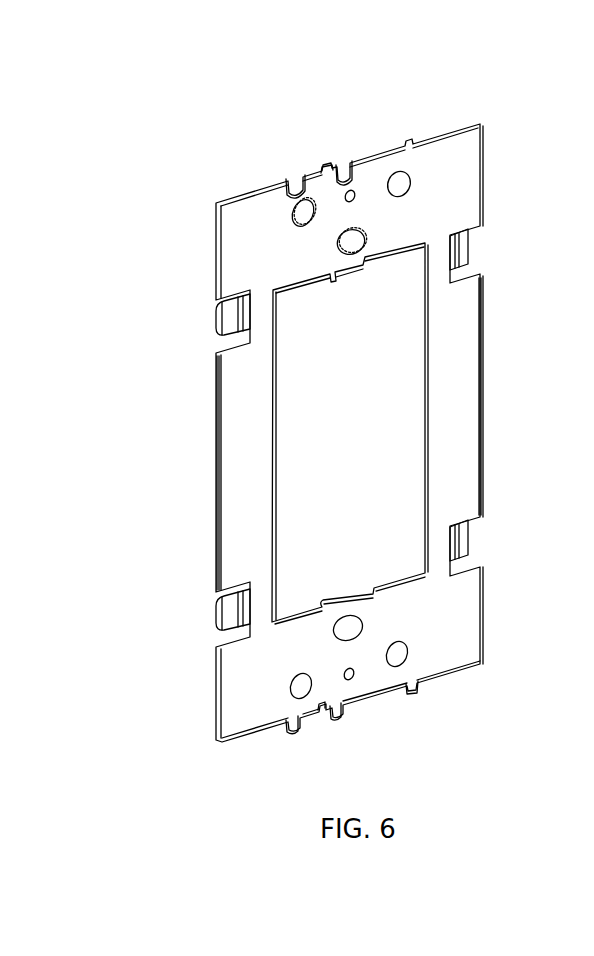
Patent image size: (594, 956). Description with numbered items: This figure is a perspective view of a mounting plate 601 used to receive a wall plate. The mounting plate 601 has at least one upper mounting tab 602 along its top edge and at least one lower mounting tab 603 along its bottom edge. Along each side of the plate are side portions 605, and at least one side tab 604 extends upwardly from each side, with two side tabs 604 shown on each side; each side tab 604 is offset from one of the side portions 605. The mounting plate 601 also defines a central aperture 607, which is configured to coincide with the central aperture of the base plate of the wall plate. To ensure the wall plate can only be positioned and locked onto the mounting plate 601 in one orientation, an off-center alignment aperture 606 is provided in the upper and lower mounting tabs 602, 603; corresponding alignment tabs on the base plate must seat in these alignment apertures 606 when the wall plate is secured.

The mounting plate 601 is at (247, 207).
The upper mounting tab 602 is at (292, 176).
The lower mounting tab 603 is at (300, 720).
The side tab 604 is at (226, 325).
The side portion 605 is at (232, 448).
The alignment aperture 606 is at (326, 166).
The central aperture 607 is at (366, 443).